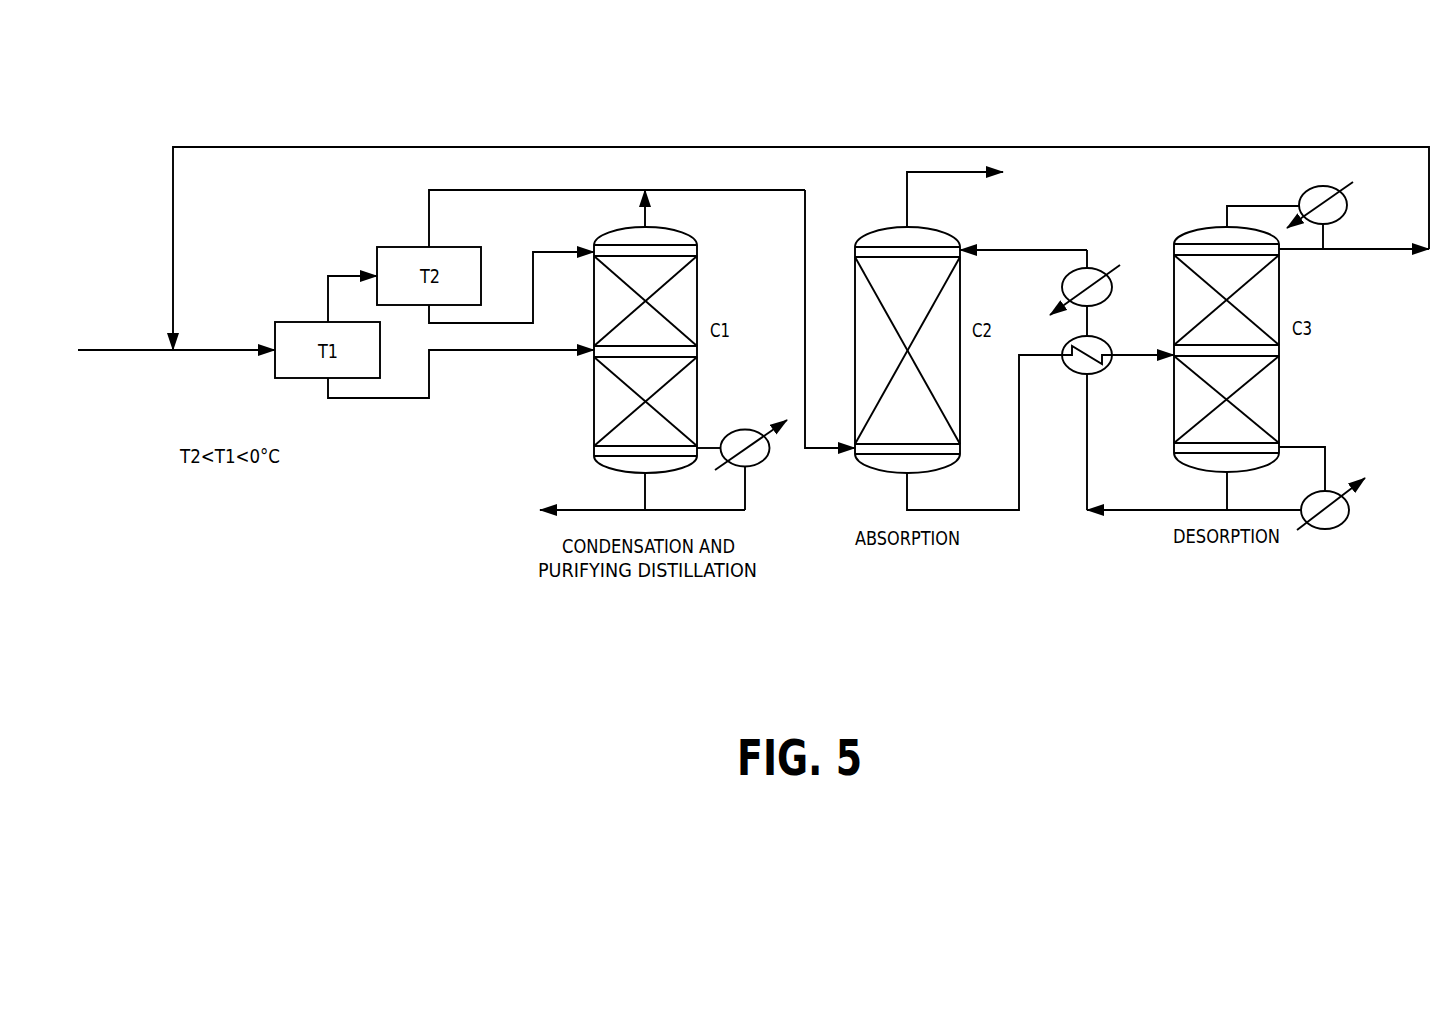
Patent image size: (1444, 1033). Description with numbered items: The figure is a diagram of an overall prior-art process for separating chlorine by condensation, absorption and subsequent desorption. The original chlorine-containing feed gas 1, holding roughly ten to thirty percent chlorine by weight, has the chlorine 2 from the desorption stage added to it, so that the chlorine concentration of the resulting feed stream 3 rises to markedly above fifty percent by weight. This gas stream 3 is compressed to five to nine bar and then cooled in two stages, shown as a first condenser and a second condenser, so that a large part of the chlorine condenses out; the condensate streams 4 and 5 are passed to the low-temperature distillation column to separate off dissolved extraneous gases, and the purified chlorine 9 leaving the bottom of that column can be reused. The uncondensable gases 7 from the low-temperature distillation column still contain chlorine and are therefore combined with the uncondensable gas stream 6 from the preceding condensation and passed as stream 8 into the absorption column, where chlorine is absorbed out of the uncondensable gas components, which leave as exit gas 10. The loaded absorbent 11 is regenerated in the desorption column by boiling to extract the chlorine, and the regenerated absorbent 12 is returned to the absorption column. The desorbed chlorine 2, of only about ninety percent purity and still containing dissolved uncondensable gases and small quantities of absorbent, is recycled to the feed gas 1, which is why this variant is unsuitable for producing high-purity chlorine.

The chlorine-containing feed gas 1 is at (125, 378).
The chlorine from the chlorine desorption stage 2 is at (801, 248).
The feed stream 3 is at (224, 365).
The condensate stream from T1 to column C1 4 is at (461, 374).
The condensate stream from T2 to column C1 5 is at (511, 297).
The uncondensable gas stream from the preceding condensation 6 is at (617, 218).
The uncondensable gases from the low-temperature distillation column 7 is at (665, 210).
The gas stream to absorption column C2 8 is at (807, 319).
The purified chlorine 9 is at (592, 507).
The exit gas stream 10 is at (974, 194).
The loaded absorbent 11 is at (984, 432).
The regenerated absorbent stream from C3 to C2 12 is at (1194, 442).